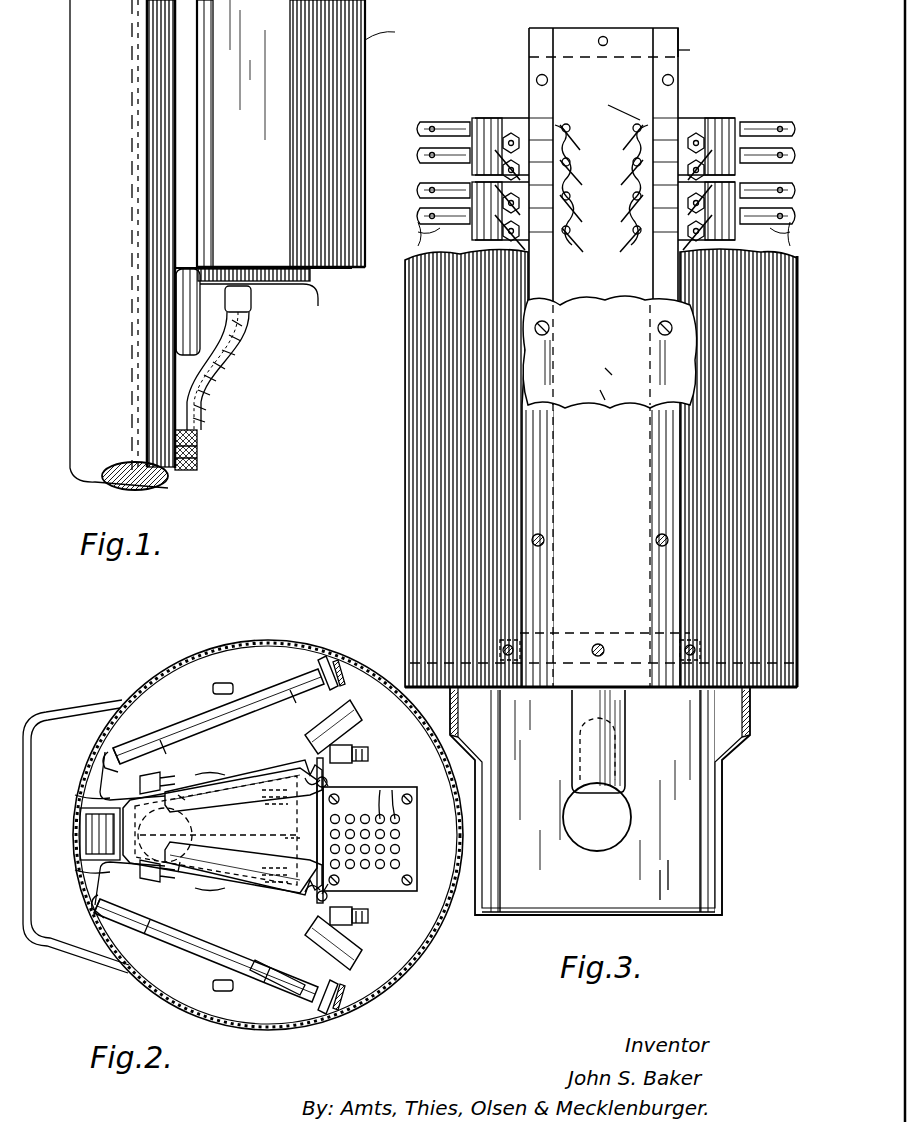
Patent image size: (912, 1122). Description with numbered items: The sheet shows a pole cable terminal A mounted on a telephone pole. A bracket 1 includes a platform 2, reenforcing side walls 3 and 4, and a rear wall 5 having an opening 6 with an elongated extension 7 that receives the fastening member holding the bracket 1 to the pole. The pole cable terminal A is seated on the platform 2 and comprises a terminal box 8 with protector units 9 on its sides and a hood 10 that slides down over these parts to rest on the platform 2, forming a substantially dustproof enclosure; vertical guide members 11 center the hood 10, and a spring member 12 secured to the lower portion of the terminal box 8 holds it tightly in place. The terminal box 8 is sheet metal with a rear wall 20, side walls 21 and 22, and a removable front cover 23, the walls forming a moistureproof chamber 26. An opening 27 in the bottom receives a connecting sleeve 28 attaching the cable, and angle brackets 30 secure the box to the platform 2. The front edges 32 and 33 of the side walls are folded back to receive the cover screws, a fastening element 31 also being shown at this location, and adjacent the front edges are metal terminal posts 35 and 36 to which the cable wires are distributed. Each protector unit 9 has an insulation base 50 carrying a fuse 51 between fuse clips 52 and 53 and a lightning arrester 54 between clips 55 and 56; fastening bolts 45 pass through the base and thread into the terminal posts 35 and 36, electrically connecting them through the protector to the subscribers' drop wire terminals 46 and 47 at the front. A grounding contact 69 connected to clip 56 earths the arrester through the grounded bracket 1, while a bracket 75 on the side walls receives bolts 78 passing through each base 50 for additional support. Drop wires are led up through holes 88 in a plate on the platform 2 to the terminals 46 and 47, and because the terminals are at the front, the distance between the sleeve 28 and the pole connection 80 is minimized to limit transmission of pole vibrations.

In FIG. 1, the bracket 1 is at (188, 322).
In FIG. 2, the bracket 1 is at (80, 712).
In FIG. 3, the bracket 1 is at (722, 833).
In FIG. 3, the platform 2 is at (445, 660).
In FIG. 3, the reenforcing side wall 3 is at (485, 792).
In FIG. 3, the reenforcing side wall 4 is at (718, 794).
In FIG. 3, the rear wall 5 is at (672, 878).
In FIG. 3, the opening 6 is at (578, 838).
In FIG. 3, the elongated extension 7 is at (580, 766).
In FIG. 2, the terminal box 8 is at (95, 802).
In FIG. 3, the terminal box 8 is at (545, 28).
In FIG. 2, the protector unit 9 is at (176, 726).
In FIG. 3, the protector unit 9 is at (410, 215).
In FIG. 1, the hood 10 is at (366, 96).
In FIG. 2, the hood 10 is at (240, 642).
In FIG. 3, the hood 10 is at (412, 348).
In FIG. 2, the vertical guide member 11 is at (342, 670).
In FIG. 2, the spring member 12 is at (82, 835).
In FIG. 2, the rear wall 20 is at (165, 835).
In FIG. 3, the rear wall 20 is at (633, 38).
In FIG. 2, the side wall 21 is at (218, 790).
In FIG. 2, the side wall 22 is at (205, 883).
In FIG. 2, the removable front cover 23 is at (318, 822).
In FIG. 3, the removable front cover 23 is at (700, 425).
In FIG. 2, the moistureproof chamber 26 is at (302, 845).
In FIG. 3, the moistureproof chamber 26 is at (619, 104).
In FIG. 2, the opening 27 is at (220, 837).
In FIG. 3, the connecting sleeve 28 is at (625, 740).
In FIG. 3, the angle bracket 30 is at (515, 640).
In FIG. 2, the screw 31 is at (328, 782).
In FIG. 3, the screw 31 is at (657, 330).
In FIG. 2, the front edge 32 is at (370, 839).
In FIG. 3, the front edge 32 is at (536, 56).
In FIG. 2, the front edge 33 is at (370, 879).
In FIG. 3, the front edge 33 is at (695, 48).
In FIG. 2, the metal terminal post 35 is at (270, 806).
In FIG. 3, the metal terminal post 35 is at (625, 195).
In FIG. 2, the metal terminal post 36 is at (276, 864).
In FIG. 3, the metal terminal post 36 is at (575, 225).
In FIG. 2, the fastening bolt 45 is at (222, 966).
In FIG. 2, the subscribers' drop wire terminal 46 is at (368, 752).
In FIG. 3, the subscribers' drop wire terminal 46 is at (688, 135).
In FIG. 2, the subscribers' drop wire terminal 47 is at (368, 918).
In FIG. 3, the subscribers' drop wire terminal 47 is at (506, 135).
In FIG. 2, the base 50 is at (120, 844).
In FIG. 2, the fuse 51 is at (258, 705).
In FIG. 2, the fuse clip 52 is at (125, 782).
In FIG. 2, the fuse clip 53 is at (320, 660).
In FIG. 3, the fuse clip 53 is at (424, 226).
In FIG. 2, the lightning arrester 54 is at (350, 700).
In FIG. 3, the lightning arrester 54 is at (470, 128).
In FIG. 2, the lightning arrester clip 55 is at (285, 982).
In FIG. 2, the lightning arrester clip 56 is at (352, 745).
In FIG. 3, the lightning arrester clip 56 is at (490, 118).
In FIG. 2, the grounding contact 69 is at (330, 778).
In FIG. 3, the grounding contact 69 is at (527, 133).
In FIG. 2, the bracket 75 is at (183, 866).
In FIG. 2, the bolt 78 is at (212, 752).
In FIG. 1, the pole connection 80 is at (198, 452).
In FIG. 2, the hole 88 is at (387, 795).
In FIG. 1, the pole cable terminal A is at (365, 46).